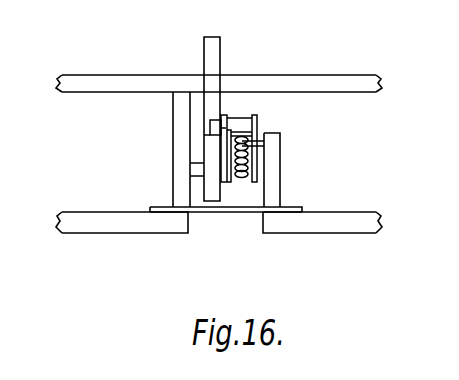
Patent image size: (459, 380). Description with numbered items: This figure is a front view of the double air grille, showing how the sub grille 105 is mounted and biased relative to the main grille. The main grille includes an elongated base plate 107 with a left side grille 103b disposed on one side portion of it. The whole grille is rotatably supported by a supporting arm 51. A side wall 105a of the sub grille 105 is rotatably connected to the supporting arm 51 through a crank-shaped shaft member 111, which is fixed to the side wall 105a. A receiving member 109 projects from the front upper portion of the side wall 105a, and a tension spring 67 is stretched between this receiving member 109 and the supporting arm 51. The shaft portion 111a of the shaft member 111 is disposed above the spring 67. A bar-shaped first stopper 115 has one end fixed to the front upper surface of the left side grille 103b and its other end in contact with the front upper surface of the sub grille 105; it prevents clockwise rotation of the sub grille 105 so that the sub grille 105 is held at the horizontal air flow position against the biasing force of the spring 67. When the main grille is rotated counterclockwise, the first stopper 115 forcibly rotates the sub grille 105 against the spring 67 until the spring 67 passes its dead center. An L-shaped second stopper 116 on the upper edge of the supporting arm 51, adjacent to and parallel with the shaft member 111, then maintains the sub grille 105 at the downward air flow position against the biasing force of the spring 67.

The elongated base plate 107 is at (120, 75).
The supporting arm 51 is at (218, 60).
The second stopper 116 is at (213, 120).
The shaft member 111 is at (258, 127).
The shaft portion 111a is at (240, 123).
The tension spring 67 is at (243, 178).
The receiving member 109 is at (266, 138).
The side wall 105a is at (281, 180).
The first stopper 115 is at (213, 213).
The left side grille 103b is at (148, 233).
The sub grille 105 is at (343, 234).